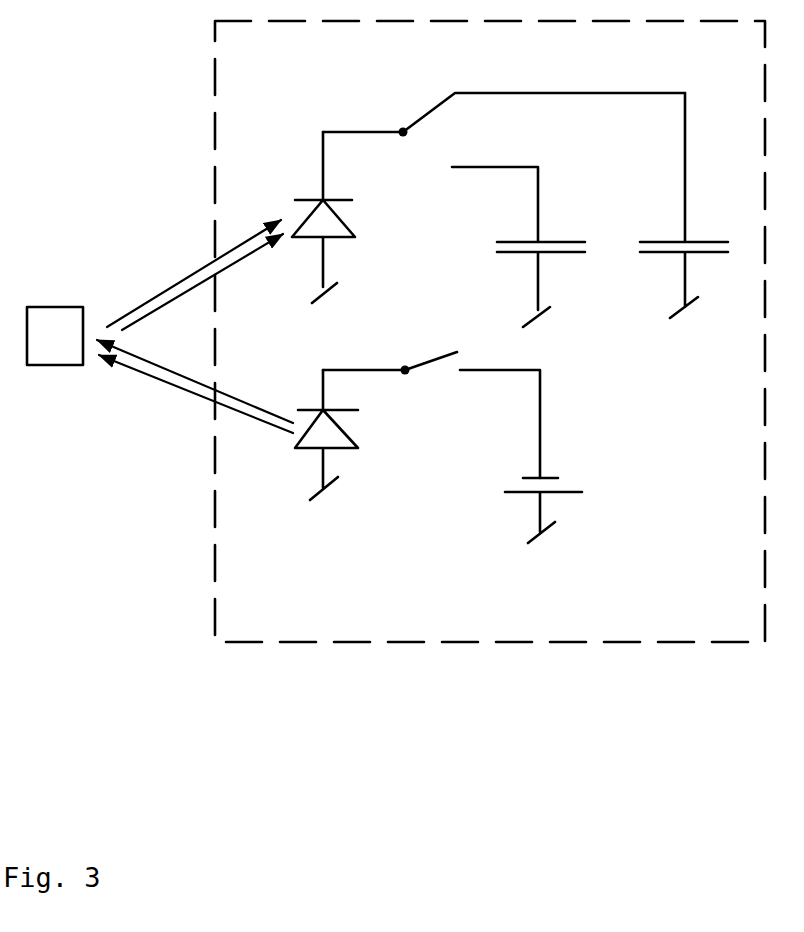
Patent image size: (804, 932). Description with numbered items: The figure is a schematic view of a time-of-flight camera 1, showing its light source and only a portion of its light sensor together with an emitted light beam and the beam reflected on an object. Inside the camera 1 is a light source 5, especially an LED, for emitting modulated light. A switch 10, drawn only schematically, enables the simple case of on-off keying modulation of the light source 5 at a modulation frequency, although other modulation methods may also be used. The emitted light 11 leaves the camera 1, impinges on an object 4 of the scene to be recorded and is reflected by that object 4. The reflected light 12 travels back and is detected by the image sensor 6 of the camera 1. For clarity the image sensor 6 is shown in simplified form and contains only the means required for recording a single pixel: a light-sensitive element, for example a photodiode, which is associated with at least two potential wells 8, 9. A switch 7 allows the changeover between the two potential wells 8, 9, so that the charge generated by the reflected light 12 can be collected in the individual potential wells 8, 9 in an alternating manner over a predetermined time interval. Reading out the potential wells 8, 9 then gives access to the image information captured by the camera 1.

The time-of-flight camera 1 is at (440, 643).
The object 4 is at (47, 367).
The light source 5 is at (286, 465).
The image sensor 6 is at (272, 143).
The switch 7 is at (430, 107).
The first potential well 8 is at (560, 242).
The second potential well 9 is at (698, 242).
The switch 10 is at (432, 362).
The emitted light 11 is at (168, 383).
The reflected light 12 is at (170, 285).